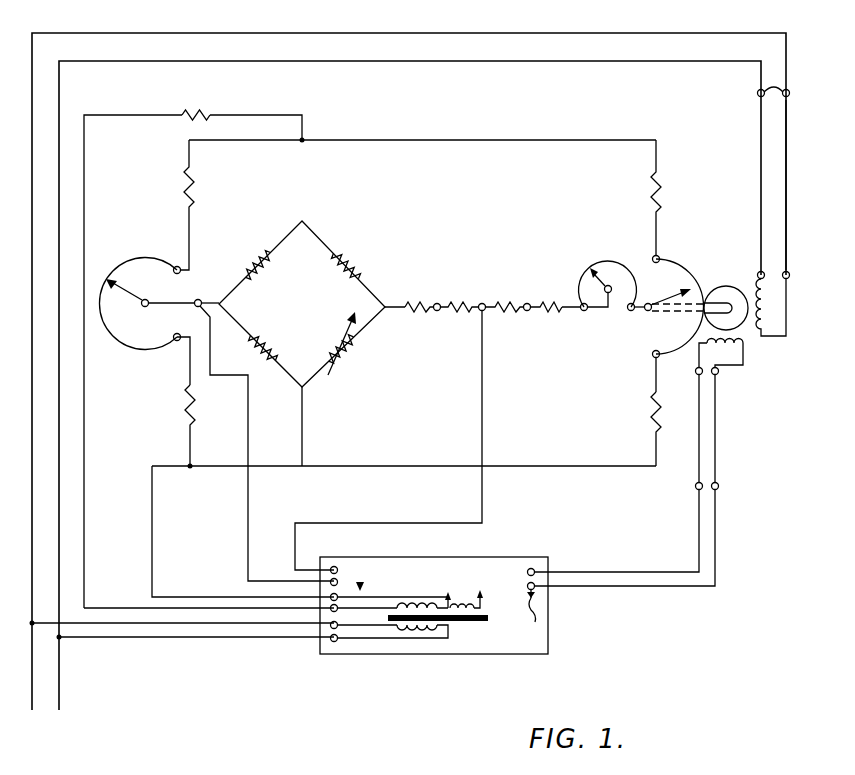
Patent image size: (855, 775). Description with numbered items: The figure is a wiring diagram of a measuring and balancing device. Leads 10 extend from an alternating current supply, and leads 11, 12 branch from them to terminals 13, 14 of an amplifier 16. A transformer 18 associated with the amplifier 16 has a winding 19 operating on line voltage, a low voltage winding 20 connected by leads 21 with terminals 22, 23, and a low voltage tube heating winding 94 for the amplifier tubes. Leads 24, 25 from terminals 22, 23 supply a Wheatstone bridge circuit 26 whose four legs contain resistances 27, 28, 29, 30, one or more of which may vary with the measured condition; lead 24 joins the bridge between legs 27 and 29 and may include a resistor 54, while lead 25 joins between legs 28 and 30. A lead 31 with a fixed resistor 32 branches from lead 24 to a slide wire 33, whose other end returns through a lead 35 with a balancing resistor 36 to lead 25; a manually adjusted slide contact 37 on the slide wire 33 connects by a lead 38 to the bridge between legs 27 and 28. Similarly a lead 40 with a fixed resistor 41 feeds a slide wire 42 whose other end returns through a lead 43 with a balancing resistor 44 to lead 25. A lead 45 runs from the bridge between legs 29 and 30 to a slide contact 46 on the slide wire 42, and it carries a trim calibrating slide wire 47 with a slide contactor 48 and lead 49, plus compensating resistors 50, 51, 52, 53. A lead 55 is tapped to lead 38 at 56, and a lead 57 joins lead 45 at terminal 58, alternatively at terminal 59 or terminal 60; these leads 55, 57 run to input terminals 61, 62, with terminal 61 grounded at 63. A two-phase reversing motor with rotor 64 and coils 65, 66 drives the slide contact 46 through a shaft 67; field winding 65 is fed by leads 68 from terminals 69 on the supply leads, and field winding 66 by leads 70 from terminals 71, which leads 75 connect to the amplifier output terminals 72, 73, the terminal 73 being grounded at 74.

The leads 10 is at (455, 61).
The lead 11 is at (121, 624).
The lead 12 is at (165, 638).
The terminal 13 is at (336, 642).
The terminal 14 is at (338, 628).
The amplifier 16 is at (458, 650).
The transformer 18 is at (480, 630).
The winding 19 is at (411, 632).
The low voltage winding 20 is at (426, 601).
The leads 21 is at (376, 604).
The terminal 22 is at (337, 611).
The terminal 23 is at (322, 607).
The lead 24 is at (128, 113).
The lead 25 is at (303, 424).
The Wheatstone bridge circuit 26 is at (318, 238).
The resistance 27 is at (263, 255).
The resistance 28 is at (260, 351).
The resistance 29 is at (360, 264).
The resistance 30 is at (349, 354).
The lead 31 is at (233, 140).
The fixed resistor 32 is at (184, 185).
The slide wire 33 is at (153, 256).
The lead 35 is at (190, 369).
The fixed resistor 36 is at (182, 407).
The slide contact 37 is at (127, 296).
The lead 38 is at (166, 303).
The lead 40 is at (455, 140).
The fixed resistor 41 is at (660, 182).
The slide wire 42 is at (670, 268).
The lead 43 is at (409, 466).
The fixed resistor 44 is at (650, 414).
The lead 45 is at (394, 308).
The slide contact 46 is at (672, 295).
The trim calibrating slide wire 47 is at (615, 262).
The slide contactor 48 is at (600, 276).
The lead 49 is at (594, 311).
The compensating resistor 50 is at (551, 303).
The compensating resistor 51 is at (512, 302).
The compensating resistor 52 is at (462, 302).
The compensating resistor 53 is at (416, 302).
The resistor 54 is at (196, 112).
The lead 55 is at (228, 375).
The tap point 56 is at (200, 299).
The lead 57 is at (482, 386).
The terminal 58 is at (480, 312).
The terminal 59 is at (440, 311).
The terminal 60 is at (526, 311).
The input terminal 61 is at (330, 580).
The input terminal 62 is at (331, 564).
The ground 63 is at (350, 587).
The rotor 64 is at (721, 288).
The field winding 65 is at (764, 336).
The field winding 66 is at (725, 355).
The shaft 67 is at (702, 318).
The leads 68 is at (786, 210).
The terminals 69 is at (760, 94).
The leads 70 is at (715, 432).
The terminals 71 is at (717, 483).
The output terminal 72 is at (531, 568).
The output terminal 73 is at (539, 590).
The ground 74 is at (538, 618).
The leads 75 is at (624, 574).
The tube heating winding 94 is at (468, 604).